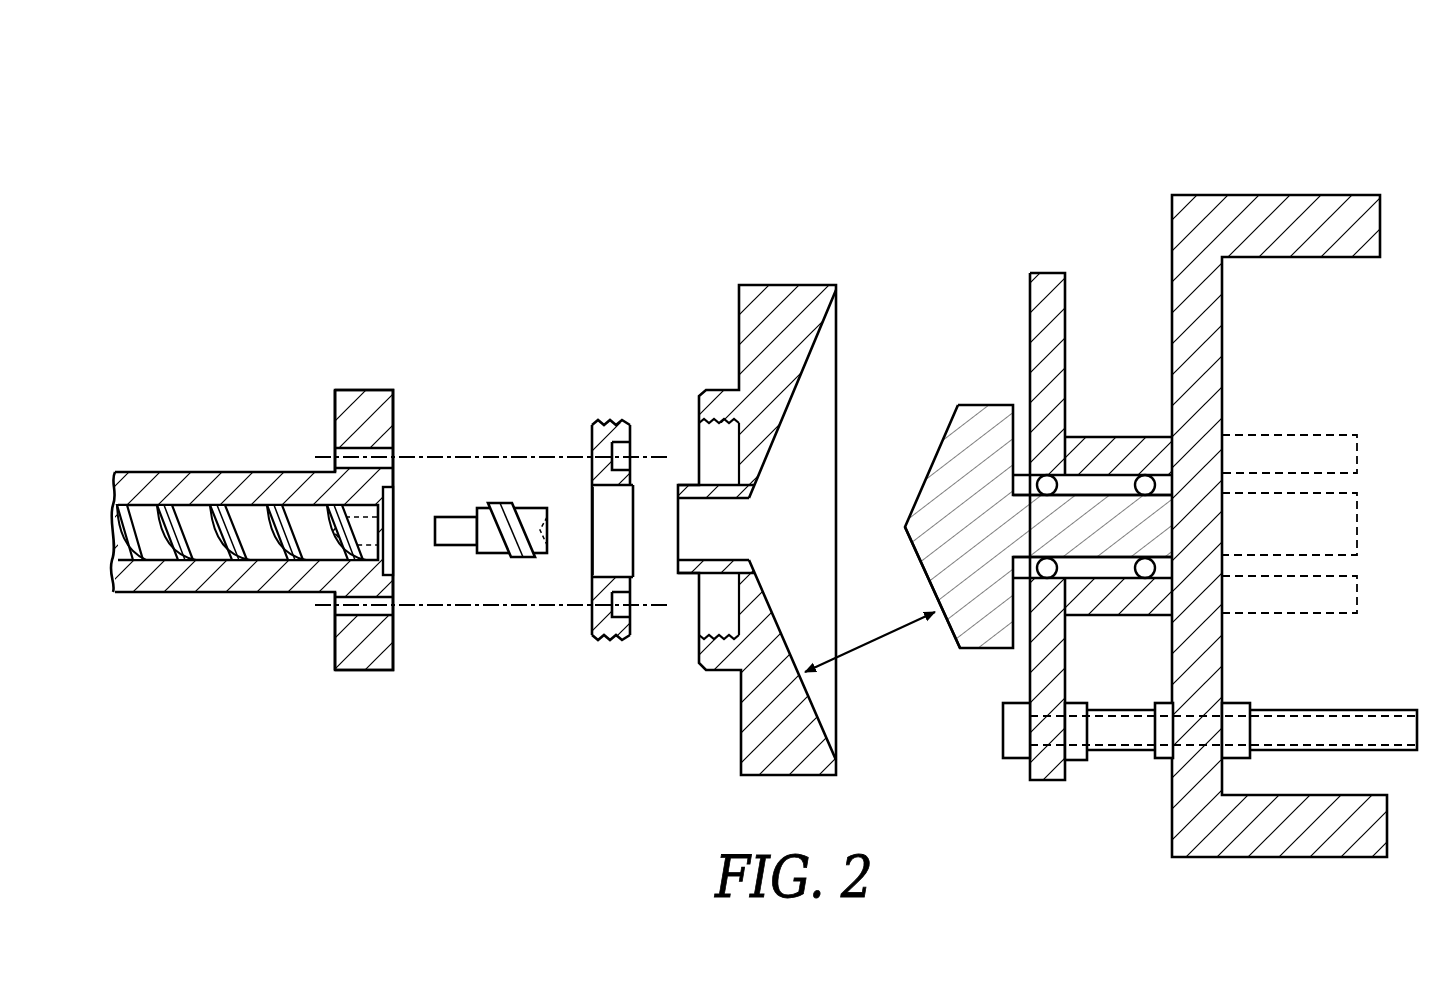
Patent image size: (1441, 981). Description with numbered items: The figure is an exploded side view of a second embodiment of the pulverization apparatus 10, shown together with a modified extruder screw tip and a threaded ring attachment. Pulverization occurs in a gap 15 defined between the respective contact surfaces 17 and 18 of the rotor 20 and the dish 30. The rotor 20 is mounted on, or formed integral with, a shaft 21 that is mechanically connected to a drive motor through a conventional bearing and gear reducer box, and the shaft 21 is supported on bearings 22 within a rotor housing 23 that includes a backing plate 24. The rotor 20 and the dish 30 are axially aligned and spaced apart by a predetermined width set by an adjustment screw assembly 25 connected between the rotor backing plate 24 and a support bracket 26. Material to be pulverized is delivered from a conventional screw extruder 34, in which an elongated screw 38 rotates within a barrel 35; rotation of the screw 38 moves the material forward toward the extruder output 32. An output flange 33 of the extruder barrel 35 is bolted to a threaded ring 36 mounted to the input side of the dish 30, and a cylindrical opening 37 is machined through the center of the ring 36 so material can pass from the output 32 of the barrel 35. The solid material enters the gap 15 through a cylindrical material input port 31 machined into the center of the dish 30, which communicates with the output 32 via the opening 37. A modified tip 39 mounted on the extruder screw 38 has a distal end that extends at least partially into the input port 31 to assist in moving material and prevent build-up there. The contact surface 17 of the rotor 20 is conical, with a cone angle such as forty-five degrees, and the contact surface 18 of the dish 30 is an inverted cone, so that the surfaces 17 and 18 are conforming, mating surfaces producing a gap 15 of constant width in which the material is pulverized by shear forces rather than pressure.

The pulverization apparatus 10 is at (1058, 107).
The gap 15 is at (847, 649).
The contact surface of rotor 17 is at (957, 642).
The contact surface of dish 18 is at (787, 413).
The rotor 20 is at (966, 404).
The shaft 21 is at (1160, 520).
The bearings 22 is at (1036, 483).
The rotor housing 23 is at (1100, 436).
The backing plate 24 is at (1047, 270).
The adjustment screw assembly 25 is at (1125, 752).
The support bracket 26 is at (1212, 190).
The dish 30 is at (775, 284).
The material input port 31 is at (690, 542).
The extruder output 32 is at (398, 510).
The output flange 33 is at (351, 388).
The screw extruder 34 is at (178, 608).
The barrel 35 is at (122, 478).
The threaded ring 36 is at (616, 421).
The cylindrical opening 37 is at (598, 560).
The screw 38 is at (292, 510).
The modified tip 39 is at (532, 557).